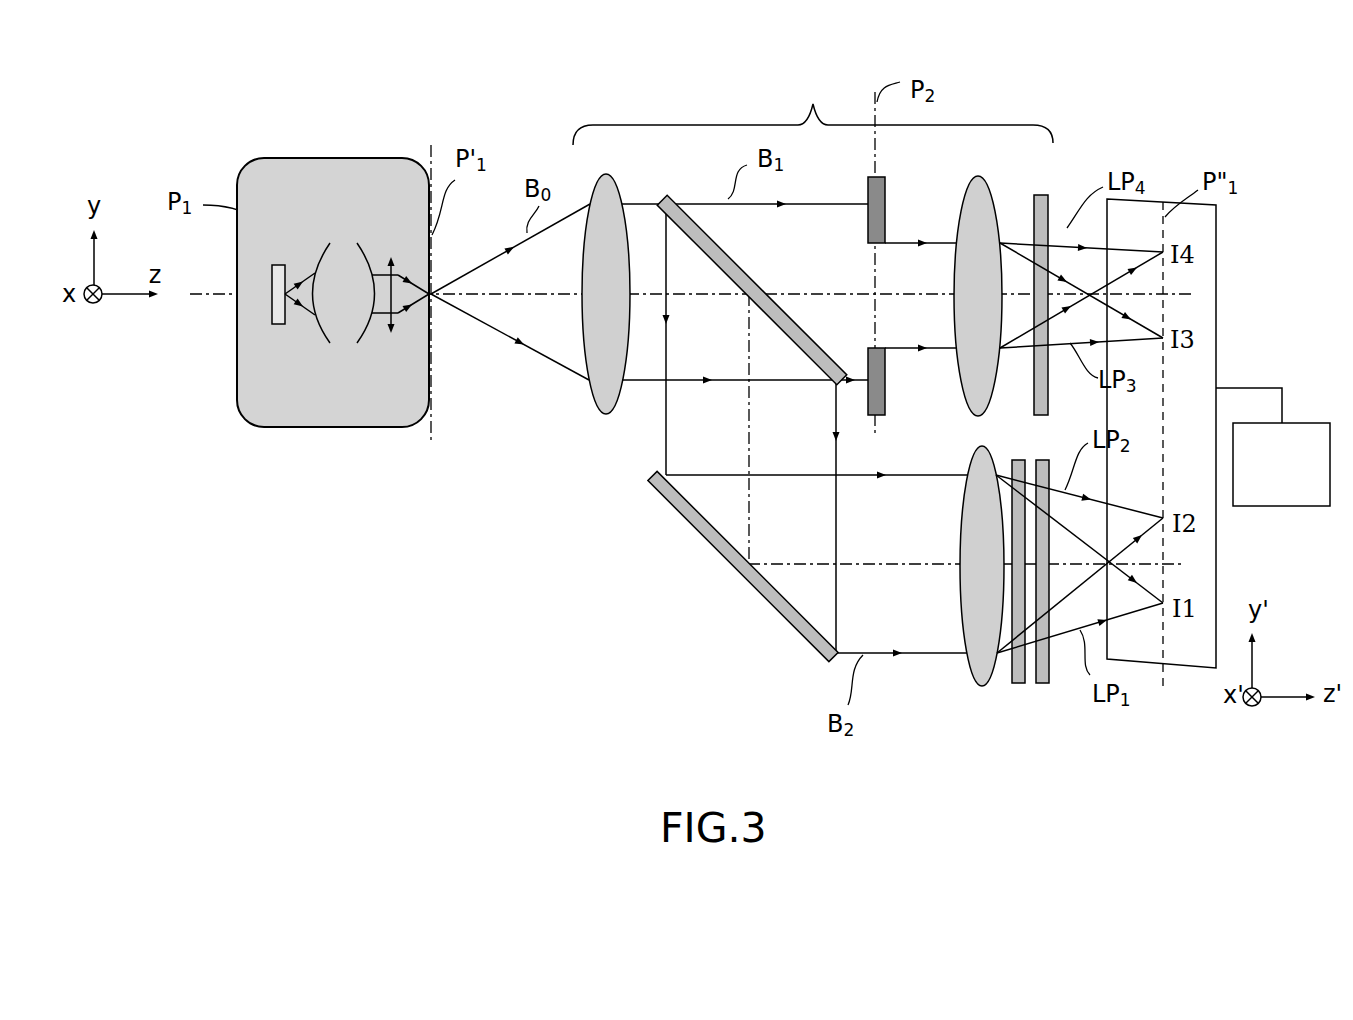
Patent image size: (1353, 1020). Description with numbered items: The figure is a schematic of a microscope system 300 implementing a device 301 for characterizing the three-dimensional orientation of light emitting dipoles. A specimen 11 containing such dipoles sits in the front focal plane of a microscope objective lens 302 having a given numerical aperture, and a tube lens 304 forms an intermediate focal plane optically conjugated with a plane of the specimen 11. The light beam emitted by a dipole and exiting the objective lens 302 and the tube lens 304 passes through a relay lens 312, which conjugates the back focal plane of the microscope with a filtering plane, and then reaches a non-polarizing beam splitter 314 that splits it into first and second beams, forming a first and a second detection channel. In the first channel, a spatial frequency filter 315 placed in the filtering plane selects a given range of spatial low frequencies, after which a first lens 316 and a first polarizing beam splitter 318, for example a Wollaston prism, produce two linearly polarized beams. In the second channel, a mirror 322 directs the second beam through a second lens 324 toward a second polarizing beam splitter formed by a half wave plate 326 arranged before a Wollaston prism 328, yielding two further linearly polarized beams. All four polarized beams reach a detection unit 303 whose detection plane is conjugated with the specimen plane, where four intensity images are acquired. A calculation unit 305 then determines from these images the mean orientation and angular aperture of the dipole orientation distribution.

The specimen 11 is at (275, 301).
The microscope system 300 is at (1052, 78).
The device 301 is at (812, 108).
The microscope objective lens 302 is at (343, 238).
The detection unit 303 is at (1163, 155).
The tube lens 304 is at (392, 336).
The calculation unit 305 is at (1263, 507).
The relay lens 312 is at (599, 348).
The non-polarizing beam splitter 314 is at (682, 212).
The spatial frequency filter 315 is at (885, 178).
The first lens 316 is at (978, 203).
The first polarizing beam splitter 318 is at (1047, 195).
The mirror 322 is at (687, 520).
The second lens 324 is at (977, 668).
The half wave plate 326 is at (1020, 683).
The Wollaston prism 328 is at (1048, 683).